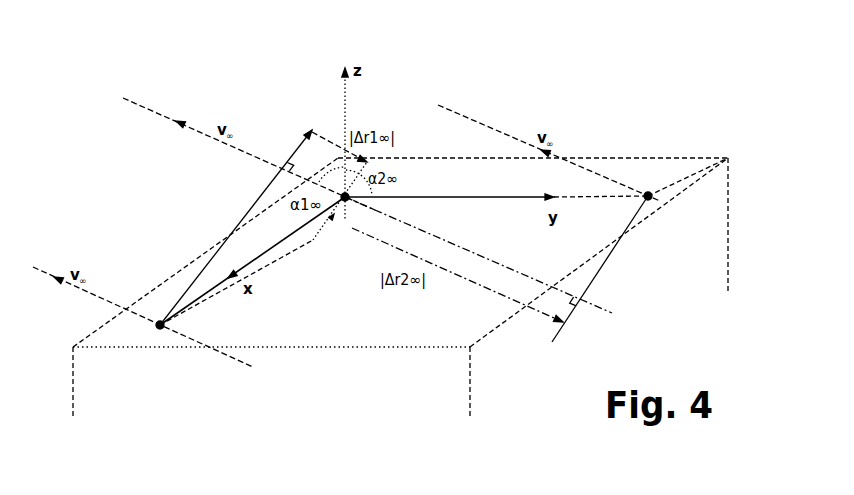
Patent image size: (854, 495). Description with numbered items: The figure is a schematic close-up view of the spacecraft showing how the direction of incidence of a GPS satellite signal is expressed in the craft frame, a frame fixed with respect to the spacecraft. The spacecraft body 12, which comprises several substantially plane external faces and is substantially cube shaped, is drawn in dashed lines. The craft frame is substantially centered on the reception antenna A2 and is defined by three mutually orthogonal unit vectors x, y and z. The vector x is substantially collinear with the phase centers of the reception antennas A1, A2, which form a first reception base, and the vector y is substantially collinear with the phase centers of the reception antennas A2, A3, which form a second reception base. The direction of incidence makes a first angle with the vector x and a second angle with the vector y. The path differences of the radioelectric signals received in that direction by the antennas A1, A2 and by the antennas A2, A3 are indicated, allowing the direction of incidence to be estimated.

The body 12 is at (730, 260).
The reception antenna A1 is at (160, 329).
The reception antenna A2 is at (345, 201).
The reception antenna A3 is at (652, 197).